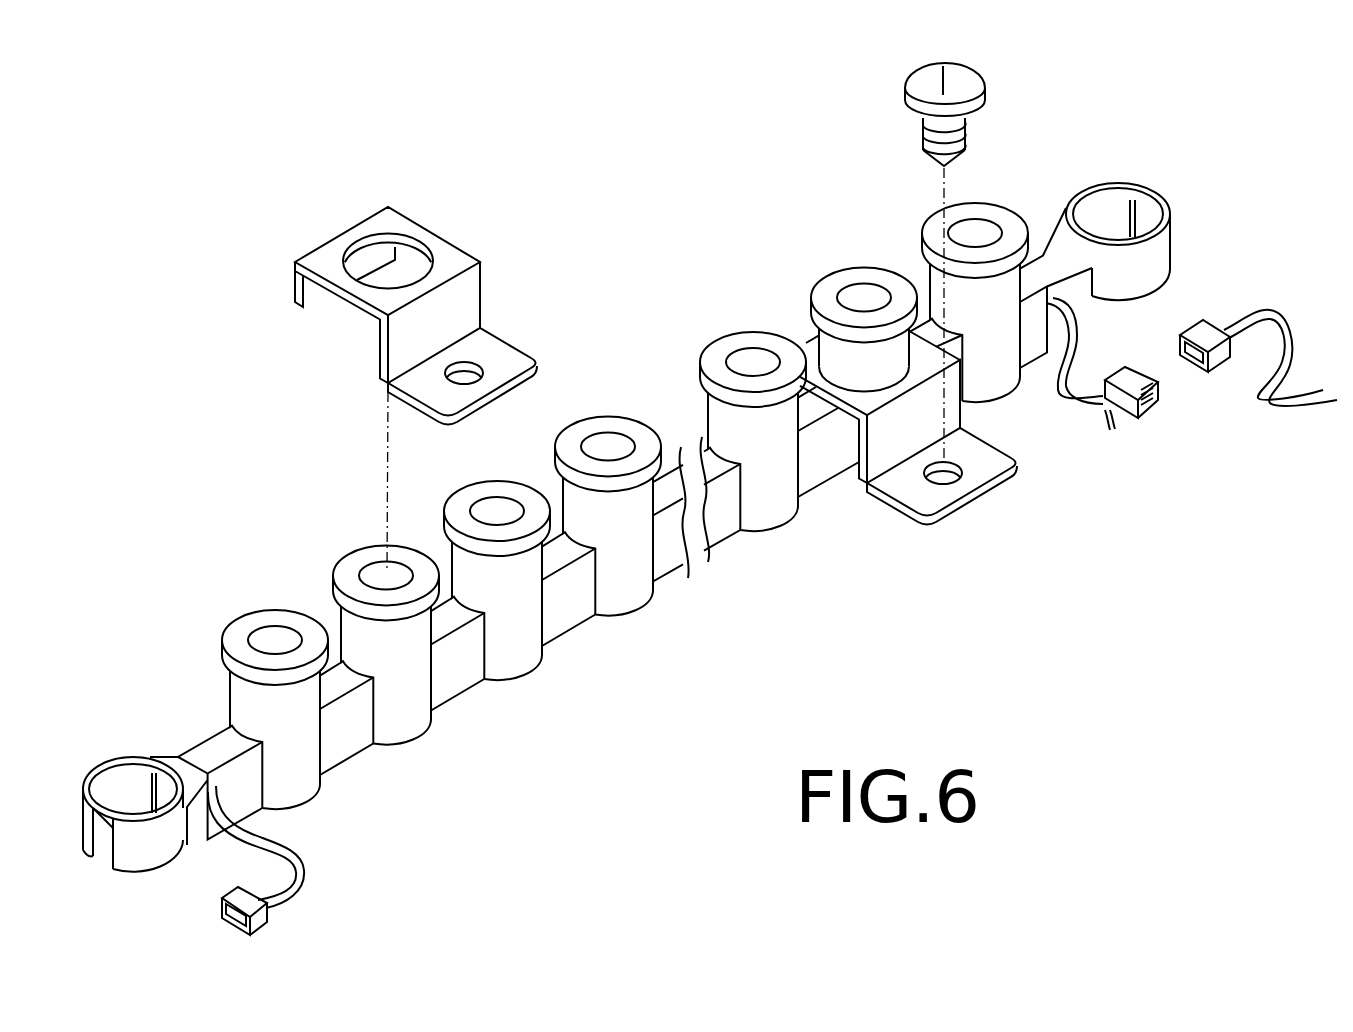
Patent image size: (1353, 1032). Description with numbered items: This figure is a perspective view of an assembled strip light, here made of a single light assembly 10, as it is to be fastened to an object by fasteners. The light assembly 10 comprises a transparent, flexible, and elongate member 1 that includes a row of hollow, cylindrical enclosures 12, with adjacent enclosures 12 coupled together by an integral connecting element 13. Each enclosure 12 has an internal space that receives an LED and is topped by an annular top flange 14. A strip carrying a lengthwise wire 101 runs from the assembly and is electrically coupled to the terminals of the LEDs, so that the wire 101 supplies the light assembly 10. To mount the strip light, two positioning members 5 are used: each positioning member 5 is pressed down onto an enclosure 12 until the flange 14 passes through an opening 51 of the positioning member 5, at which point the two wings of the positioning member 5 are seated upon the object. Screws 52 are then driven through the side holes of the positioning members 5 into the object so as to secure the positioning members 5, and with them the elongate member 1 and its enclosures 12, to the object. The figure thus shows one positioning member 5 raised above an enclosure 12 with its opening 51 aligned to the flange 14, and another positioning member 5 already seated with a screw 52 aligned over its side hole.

The elongate member 1 is at (620, 418).
The positioning member 5 is at (325, 253).
The light assembly 10 is at (614, 678).
The enclosure 12 is at (403, 727).
The connecting element 13 is at (812, 410).
The annular top flange 14 is at (255, 629).
The opening 51 is at (413, 260).
The screw 52 is at (910, 84).
The wire 101 is at (1108, 414).